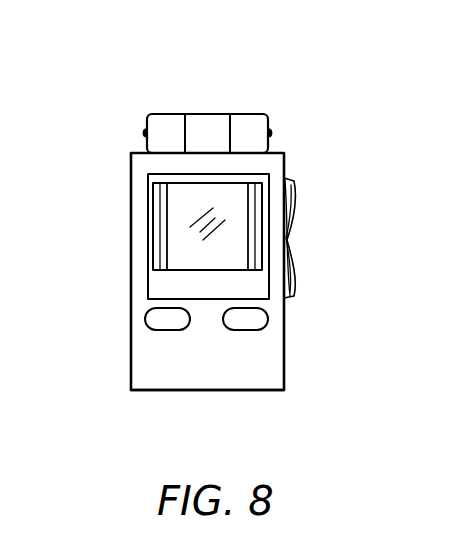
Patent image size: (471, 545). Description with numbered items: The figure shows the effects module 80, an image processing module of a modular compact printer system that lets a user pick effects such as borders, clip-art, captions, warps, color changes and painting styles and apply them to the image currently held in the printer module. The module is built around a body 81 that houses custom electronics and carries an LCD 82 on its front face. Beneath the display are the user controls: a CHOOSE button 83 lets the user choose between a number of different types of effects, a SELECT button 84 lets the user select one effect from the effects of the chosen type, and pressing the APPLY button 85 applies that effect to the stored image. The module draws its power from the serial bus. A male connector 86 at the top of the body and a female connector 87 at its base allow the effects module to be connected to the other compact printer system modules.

The portable electronic device 80 is at (308, 92).
The body 81 is at (284, 362).
The LCD 82 is at (175, 221).
The CHOOSE button 83 is at (155, 319).
The SELECT button 84 is at (295, 190).
The APPLY button 85 is at (260, 318).
The male connector 86 is at (162, 114).
The female connector 87 is at (150, 390).